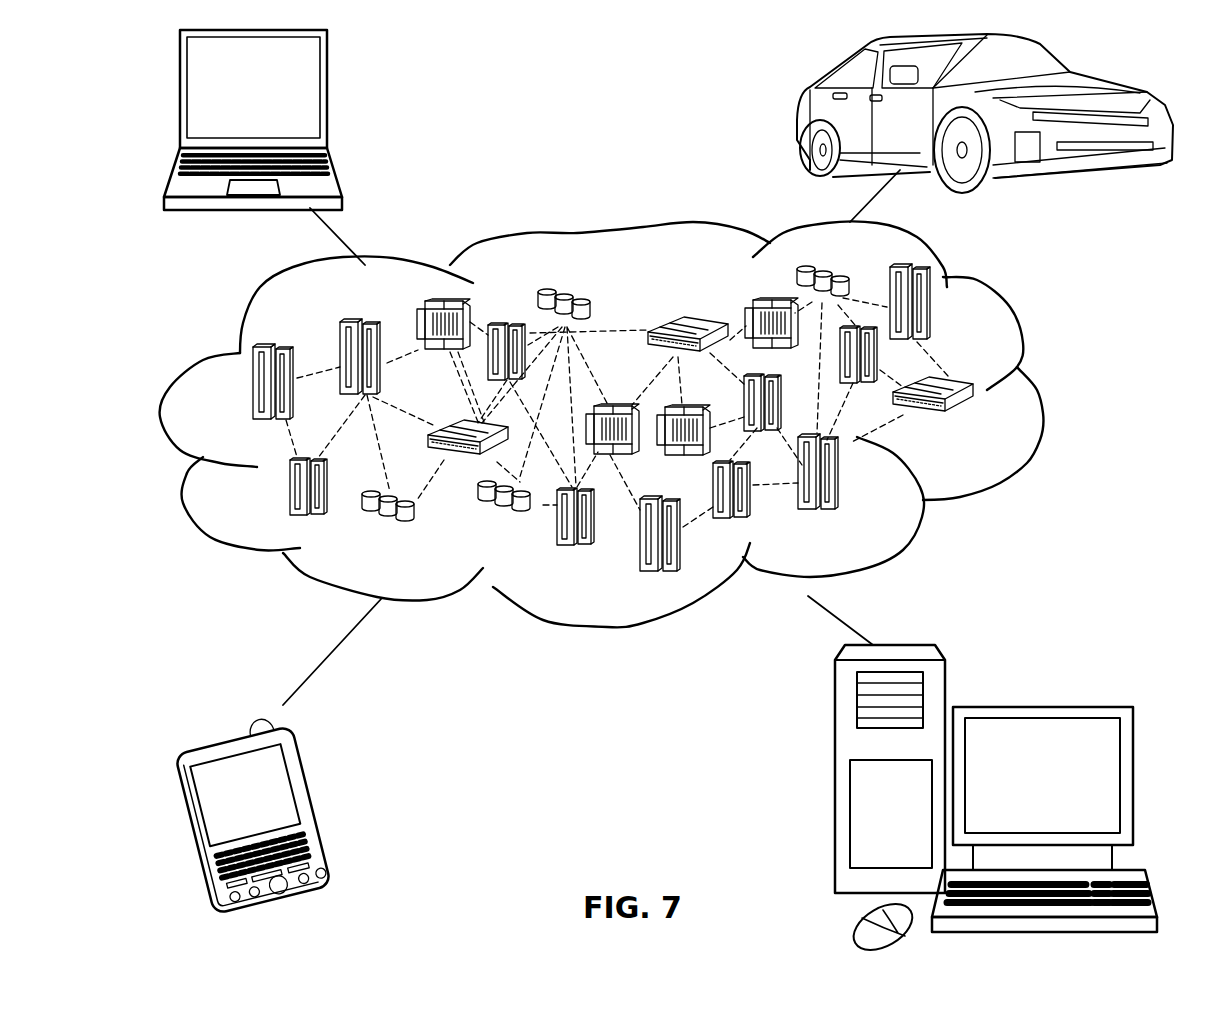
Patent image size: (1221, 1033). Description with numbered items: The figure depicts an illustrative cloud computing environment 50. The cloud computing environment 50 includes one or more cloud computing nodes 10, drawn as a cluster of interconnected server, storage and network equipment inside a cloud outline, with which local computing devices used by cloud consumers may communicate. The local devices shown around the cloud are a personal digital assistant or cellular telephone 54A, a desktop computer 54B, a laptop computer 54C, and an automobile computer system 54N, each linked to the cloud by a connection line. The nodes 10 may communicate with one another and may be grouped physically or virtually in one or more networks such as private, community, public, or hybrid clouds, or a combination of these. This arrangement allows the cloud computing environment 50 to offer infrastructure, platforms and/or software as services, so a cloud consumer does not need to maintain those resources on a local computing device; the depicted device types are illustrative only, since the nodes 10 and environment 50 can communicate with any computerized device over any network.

The cloud computing node 10 is at (977, 427).
The cloud computing environment 50 is at (1040, 392).
The personal digital assistant (PDA) or cellular telephone 54A is at (317, 807).
The desktop computer 54B is at (1040, 707).
The laptop computer 54C is at (330, 98).
The automobile computer system 54N is at (800, 116).